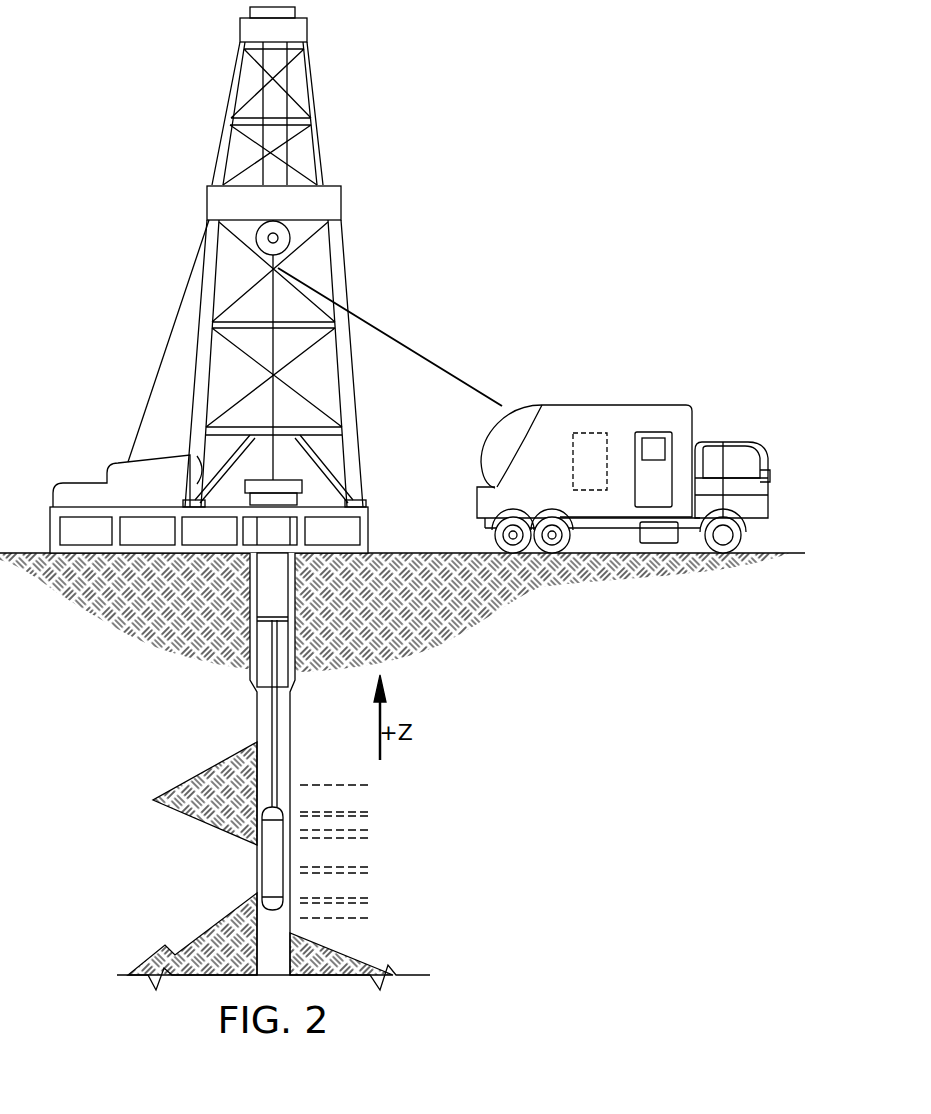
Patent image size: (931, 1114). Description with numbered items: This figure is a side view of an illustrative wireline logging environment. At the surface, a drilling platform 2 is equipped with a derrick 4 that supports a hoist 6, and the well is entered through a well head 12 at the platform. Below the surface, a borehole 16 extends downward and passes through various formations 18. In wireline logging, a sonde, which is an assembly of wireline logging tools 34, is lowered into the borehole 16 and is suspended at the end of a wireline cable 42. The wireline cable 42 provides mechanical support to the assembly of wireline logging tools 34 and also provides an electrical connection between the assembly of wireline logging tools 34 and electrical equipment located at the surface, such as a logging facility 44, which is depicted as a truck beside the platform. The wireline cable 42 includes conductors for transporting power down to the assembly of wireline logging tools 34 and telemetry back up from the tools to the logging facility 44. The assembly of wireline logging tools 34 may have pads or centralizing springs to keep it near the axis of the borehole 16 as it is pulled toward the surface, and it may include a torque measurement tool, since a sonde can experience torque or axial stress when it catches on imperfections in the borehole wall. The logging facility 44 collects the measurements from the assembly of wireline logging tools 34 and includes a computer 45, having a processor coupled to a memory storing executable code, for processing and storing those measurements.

The drilling platform 2 is at (370, 528).
The derrick 4 is at (360, 465).
The hoist 6 is at (267, 247).
The well head 12 is at (253, 480).
The borehole 16 is at (291, 742).
The formations 18 is at (375, 783).
The assembly of wireline logging tools 34 is at (261, 857).
The wireline cable 42 is at (403, 345).
The logging facility 44 is at (657, 402).
The computer 45 is at (573, 460).